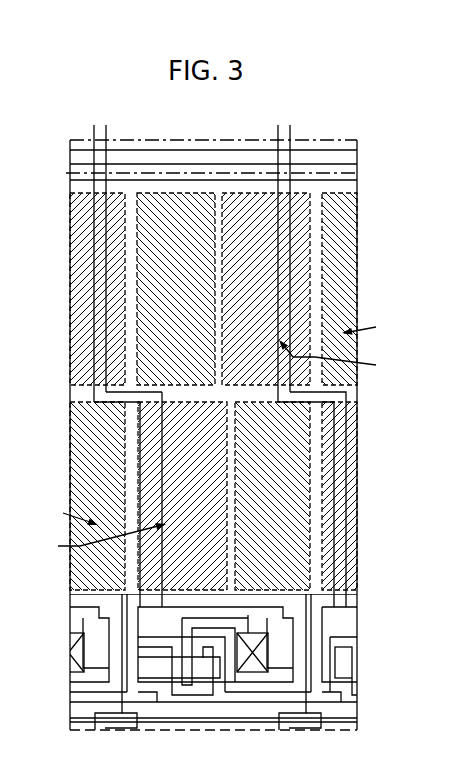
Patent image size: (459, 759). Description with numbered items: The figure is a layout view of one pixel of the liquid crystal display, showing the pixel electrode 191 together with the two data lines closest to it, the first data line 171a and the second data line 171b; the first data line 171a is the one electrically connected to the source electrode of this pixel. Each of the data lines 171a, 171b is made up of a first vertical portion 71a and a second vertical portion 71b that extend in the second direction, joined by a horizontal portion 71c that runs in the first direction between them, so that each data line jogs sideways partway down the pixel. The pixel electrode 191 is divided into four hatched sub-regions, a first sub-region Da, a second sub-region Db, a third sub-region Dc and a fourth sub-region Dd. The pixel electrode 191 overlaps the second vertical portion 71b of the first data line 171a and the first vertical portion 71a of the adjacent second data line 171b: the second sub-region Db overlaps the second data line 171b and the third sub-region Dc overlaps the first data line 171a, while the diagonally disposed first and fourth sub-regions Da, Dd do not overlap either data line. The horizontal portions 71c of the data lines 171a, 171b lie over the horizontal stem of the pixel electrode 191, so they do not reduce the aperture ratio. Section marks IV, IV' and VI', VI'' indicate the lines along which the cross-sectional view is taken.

The first sub-region Da is at (137, 228).
The second sub-region Db is at (310, 225).
The third sub-region Dc is at (135, 480).
The fourth sub-region Dd is at (312, 538).
The first vertical portion 71a is at (290, 262).
The second vertical portion 71b is at (132, 437).
The horizontal portion 71c is at (117, 402).
The first data line 171a is at (105, 294).
The second data line 171b is at (342, 437).
The pixel electrode 191 is at (312, 507).
The section line IV is at (102, 539).
The section line IV' is at (68, 513).
The section line VI' is at (339, 358).
The section line VI'' is at (373, 330).